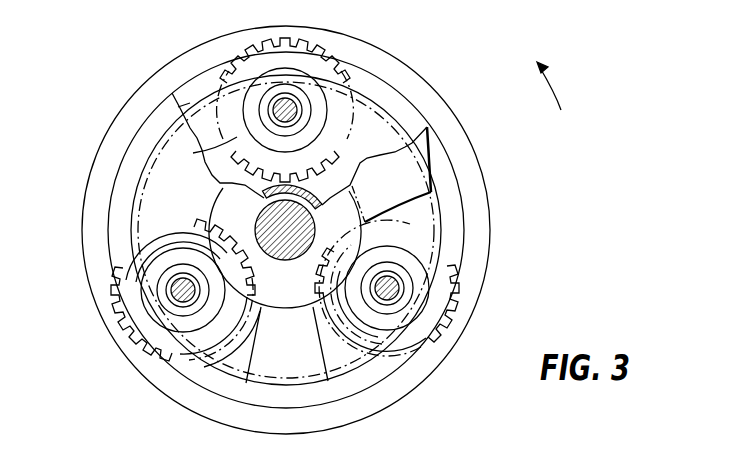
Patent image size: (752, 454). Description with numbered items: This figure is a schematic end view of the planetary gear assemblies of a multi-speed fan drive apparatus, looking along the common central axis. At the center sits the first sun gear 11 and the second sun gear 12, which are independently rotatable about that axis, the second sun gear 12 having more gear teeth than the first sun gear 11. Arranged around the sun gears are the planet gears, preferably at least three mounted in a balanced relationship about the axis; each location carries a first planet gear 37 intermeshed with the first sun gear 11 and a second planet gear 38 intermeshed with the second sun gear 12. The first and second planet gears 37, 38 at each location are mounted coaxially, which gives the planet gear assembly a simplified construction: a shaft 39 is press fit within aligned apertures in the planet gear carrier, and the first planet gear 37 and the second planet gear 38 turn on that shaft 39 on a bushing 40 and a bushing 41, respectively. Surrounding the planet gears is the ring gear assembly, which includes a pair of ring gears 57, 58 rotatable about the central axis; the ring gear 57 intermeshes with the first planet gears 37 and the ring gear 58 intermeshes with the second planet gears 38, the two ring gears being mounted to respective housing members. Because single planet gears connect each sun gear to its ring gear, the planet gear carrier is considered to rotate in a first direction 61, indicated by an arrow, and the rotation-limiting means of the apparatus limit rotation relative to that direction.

The first sun gear 11 is at (250, 288).
The second sun gear 12 is at (345, 189).
The first planet gear 37 is at (205, 152).
The second planet gear 38 is at (137, 256).
The shaft 39 is at (180, 78).
The bushing 40 is at (190, 103).
The bushing 41 is at (186, 297).
The ring gear 57 is at (382, 62).
The ring gear 58 is at (140, 323).
The first direction 61 is at (555, 92).